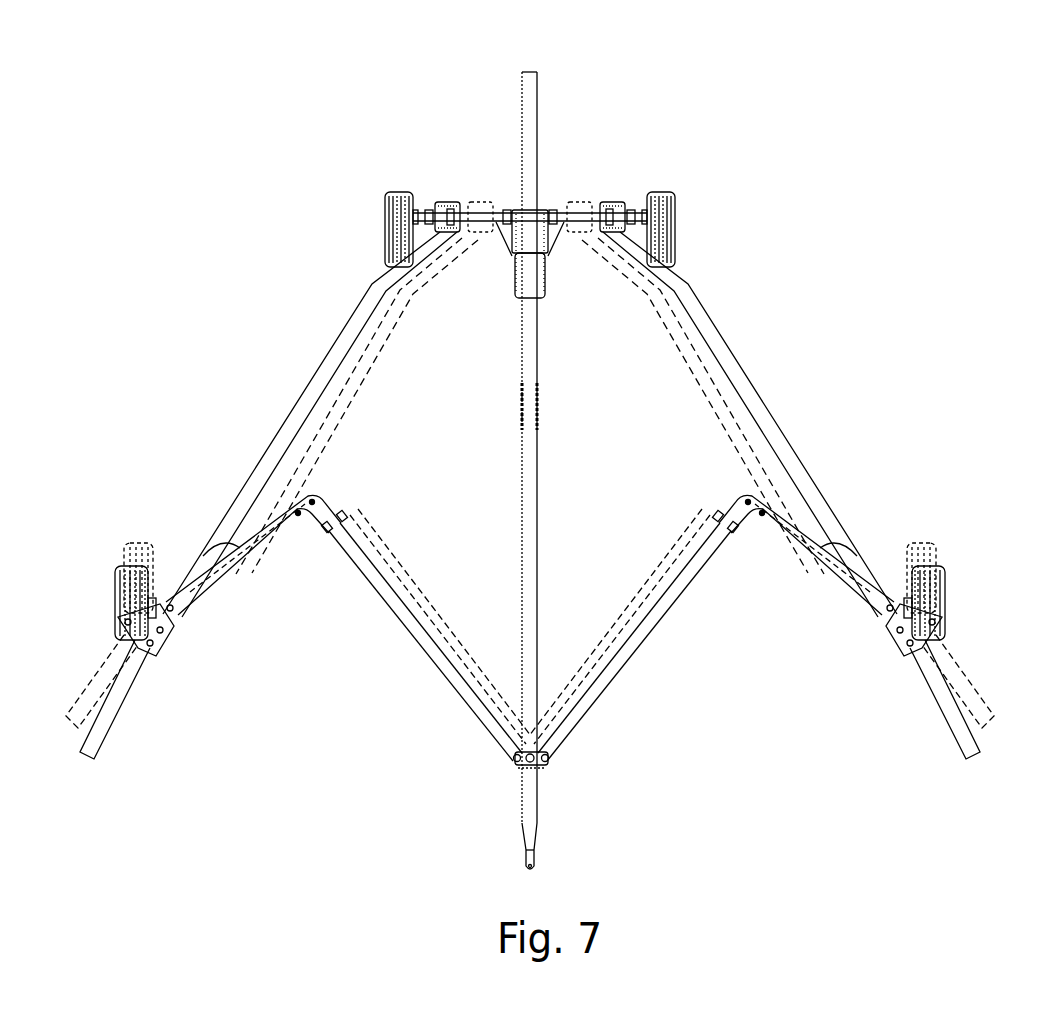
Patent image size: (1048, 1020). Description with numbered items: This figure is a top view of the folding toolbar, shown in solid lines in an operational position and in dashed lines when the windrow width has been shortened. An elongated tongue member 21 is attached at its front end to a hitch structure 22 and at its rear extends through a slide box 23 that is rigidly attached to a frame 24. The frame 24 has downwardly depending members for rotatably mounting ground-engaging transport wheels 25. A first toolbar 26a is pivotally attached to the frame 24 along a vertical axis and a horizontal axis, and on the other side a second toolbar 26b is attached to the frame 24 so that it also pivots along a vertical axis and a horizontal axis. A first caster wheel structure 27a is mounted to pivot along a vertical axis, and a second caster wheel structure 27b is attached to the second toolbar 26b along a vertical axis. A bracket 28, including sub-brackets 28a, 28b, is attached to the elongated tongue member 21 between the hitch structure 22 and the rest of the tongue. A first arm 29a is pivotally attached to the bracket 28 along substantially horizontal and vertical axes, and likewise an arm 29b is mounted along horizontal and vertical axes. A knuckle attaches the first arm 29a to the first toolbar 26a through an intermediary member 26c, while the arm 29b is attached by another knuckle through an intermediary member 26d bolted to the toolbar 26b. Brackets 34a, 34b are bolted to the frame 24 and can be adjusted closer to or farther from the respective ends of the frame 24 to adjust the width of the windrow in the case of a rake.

The elongated tongue member 21 is at (535, 360).
The hitch structure 22 is at (540, 810).
The slide box 23 is at (527, 242).
The frame 24 is at (468, 202).
The ground-engaging transport wheels 25 is at (385, 195).
The first toolbar 26a is at (808, 468).
The second toolbar 26b is at (247, 487).
The intermediary member 26c is at (857, 563).
The intermediary member 26d is at (203, 560).
The first caster wheel structure 27a is at (942, 567).
The second caster wheel structure 27b is at (120, 570).
The bracket 28 is at (520, 765).
The sub-bracket 28a is at (552, 755).
The sub-bracket 28b is at (508, 755).
The first arm 29a is at (682, 603).
The arm 29b is at (382, 600).
The bracket 34a is at (618, 201).
The bracket 34b is at (442, 201).